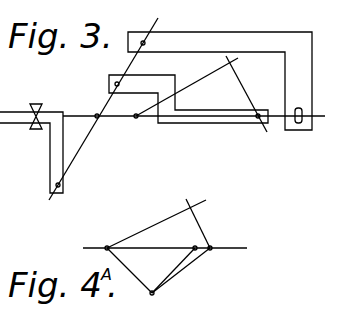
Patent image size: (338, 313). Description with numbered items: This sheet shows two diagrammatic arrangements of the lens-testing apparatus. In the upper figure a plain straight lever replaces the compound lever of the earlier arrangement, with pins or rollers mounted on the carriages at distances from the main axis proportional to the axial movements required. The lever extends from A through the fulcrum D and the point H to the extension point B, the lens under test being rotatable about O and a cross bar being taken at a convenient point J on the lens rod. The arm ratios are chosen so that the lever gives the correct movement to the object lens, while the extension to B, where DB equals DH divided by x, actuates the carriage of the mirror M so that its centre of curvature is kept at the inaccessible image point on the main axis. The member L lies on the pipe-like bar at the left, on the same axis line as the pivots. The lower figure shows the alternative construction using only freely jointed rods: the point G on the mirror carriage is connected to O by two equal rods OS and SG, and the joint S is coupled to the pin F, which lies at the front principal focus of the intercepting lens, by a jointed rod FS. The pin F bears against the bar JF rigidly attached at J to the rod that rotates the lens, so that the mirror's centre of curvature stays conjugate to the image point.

In FIG. 3, the valve L is at (31, 140).
In FIG. 3, the end of lever A is at (103, 109).
In FIG. 3, the lever fulcrum D is at (90, 108).
In FIG. 3, the lever extension point B is at (220, 81).
In FIG. 3, the lever arm end H is at (188, 99).
In FIG. 3, the rotation axis of lens O is at (184, 97).
In FIG. 4A, the rotation axis of lens O is at (152, 246).
In FIG. 3, the point on lens rod J is at (246, 94).
In FIG. 4A, the point on lens rod J is at (198, 223).
In FIG. 3, the mirror M is at (296, 107).
In FIG. 4A, the point on mirror carriage G is at (174, 262).
In FIG. 4A, the pin at front principal focus F is at (186, 262).
In FIG. 4A, the rod joint S is at (152, 284).